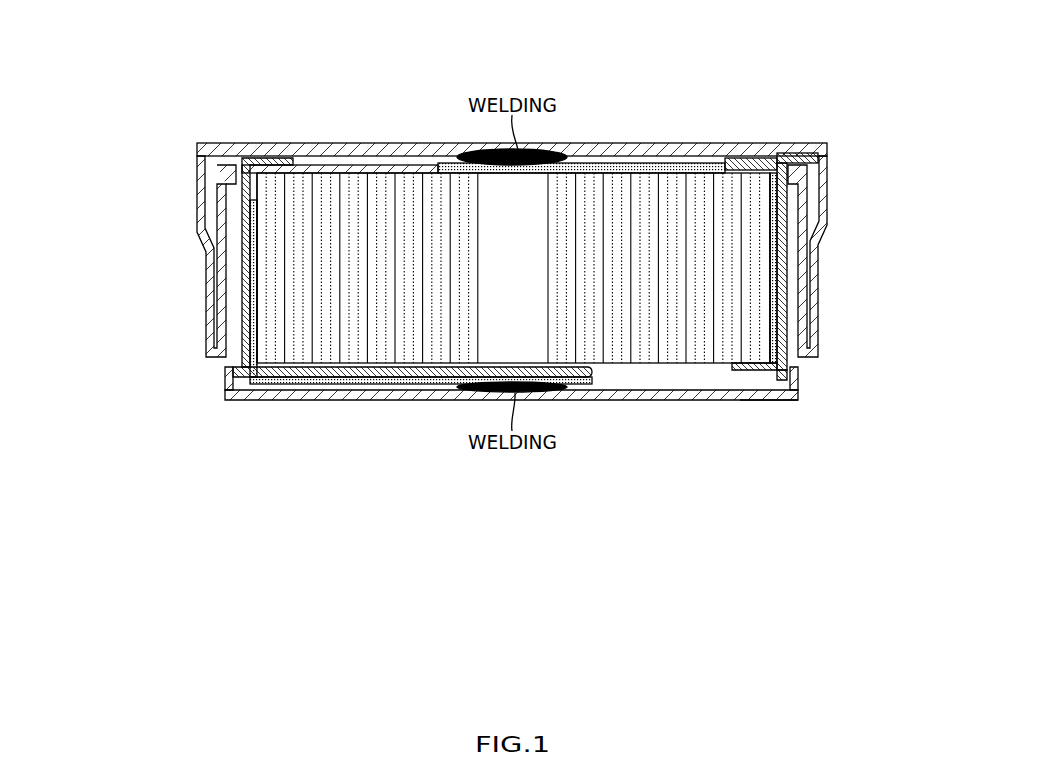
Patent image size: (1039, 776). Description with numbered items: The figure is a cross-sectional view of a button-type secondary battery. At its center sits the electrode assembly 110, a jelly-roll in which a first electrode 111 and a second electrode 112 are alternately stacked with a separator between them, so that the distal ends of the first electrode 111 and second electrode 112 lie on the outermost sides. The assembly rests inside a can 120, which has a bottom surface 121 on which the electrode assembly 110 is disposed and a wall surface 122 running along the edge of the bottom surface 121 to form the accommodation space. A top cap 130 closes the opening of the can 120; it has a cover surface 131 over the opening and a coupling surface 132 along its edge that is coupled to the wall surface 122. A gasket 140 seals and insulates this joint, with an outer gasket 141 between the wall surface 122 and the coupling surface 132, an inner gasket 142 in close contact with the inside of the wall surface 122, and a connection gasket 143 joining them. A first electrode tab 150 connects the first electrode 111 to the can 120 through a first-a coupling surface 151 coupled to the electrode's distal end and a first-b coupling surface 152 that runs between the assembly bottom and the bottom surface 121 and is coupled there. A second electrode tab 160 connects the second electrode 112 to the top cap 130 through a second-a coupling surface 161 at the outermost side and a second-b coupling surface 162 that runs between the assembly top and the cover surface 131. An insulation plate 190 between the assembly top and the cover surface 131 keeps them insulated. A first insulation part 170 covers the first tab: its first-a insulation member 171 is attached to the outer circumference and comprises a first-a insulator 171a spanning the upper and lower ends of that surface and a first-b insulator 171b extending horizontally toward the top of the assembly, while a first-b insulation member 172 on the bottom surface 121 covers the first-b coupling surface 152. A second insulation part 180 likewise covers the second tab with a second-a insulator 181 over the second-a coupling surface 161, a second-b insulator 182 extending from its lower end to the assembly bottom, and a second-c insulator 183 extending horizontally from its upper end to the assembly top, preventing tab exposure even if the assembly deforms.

The electrode assembly 110 is at (668, 358).
The first electrode 111 is at (268, 172).
The second electrode 112 is at (763, 318).
The can 120 is at (830, 490).
The bottom surface 121 is at (787, 400).
The wall surface 122 is at (800, 393).
The top cap 130 is at (857, 52).
The cover surface 131 is at (813, 140).
The coupling surface 132 is at (835, 152).
The gasket 140 is at (258, 57).
The outer gasket 141 is at (207, 193).
The inner gasket 142 is at (262, 178).
The connection gasket 143 is at (232, 170).
The first electrode tab 150 is at (320, 452).
The first-a coupling surface 151 is at (237, 387).
The first-b coupling surface 152 is at (317, 388).
The second electrode tab 160 is at (748, 88).
The second-a coupling surface 161 is at (750, 168).
The second-b coupling surface 162 is at (643, 165).
The first insulation part 170 is at (642, 540).
The first-a insulation member 171 is at (82, 190).
The first-a insulator 171a is at (262, 366).
The first-b insulator 171b is at (262, 202).
The first-b insulation member 172 is at (452, 372).
The second insulation part 180 is at (885, 162).
The second-a insulator 181 is at (790, 218).
The second-b insulator 182 is at (795, 380).
The second-c insulator 183 is at (813, 160).
The insulation plate 190 is at (372, 168).